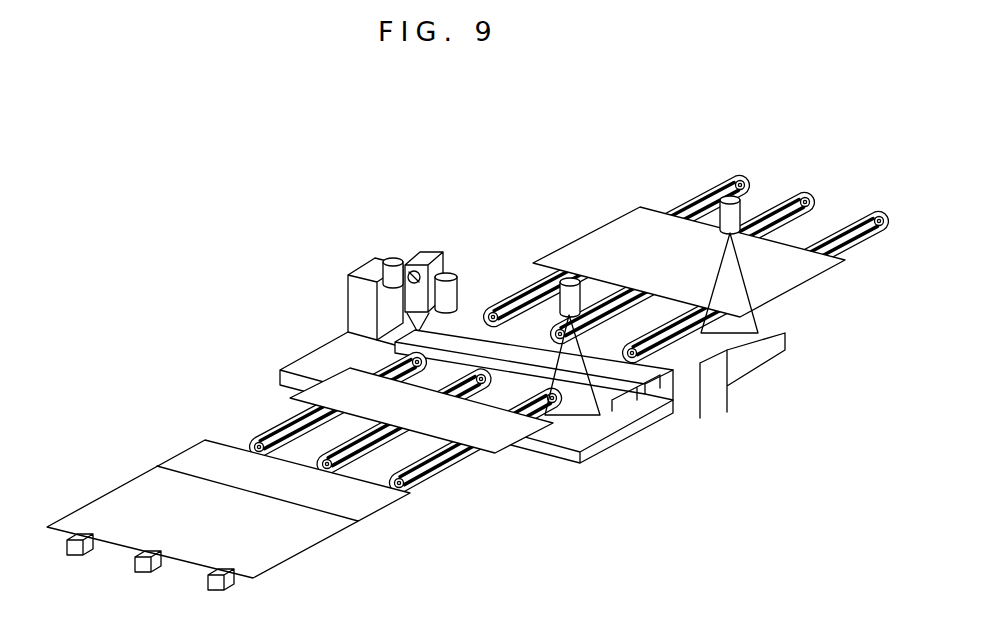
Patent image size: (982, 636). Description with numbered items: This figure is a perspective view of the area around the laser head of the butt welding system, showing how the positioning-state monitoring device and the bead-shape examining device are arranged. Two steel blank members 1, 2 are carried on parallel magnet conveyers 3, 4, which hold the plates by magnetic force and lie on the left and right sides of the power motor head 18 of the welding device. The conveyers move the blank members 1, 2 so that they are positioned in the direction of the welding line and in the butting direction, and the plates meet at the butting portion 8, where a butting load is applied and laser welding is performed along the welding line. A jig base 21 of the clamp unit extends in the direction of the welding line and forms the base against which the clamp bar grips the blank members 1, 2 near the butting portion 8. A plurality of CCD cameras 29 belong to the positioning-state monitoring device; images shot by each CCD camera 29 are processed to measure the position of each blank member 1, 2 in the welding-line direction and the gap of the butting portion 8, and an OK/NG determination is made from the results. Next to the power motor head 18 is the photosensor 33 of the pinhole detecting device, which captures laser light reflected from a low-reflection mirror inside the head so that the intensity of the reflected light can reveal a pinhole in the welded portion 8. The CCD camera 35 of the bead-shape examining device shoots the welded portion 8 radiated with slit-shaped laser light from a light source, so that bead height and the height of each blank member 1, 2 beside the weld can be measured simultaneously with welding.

The blank member 1 is at (112, 503).
The blank member 2 is at (190, 460).
The magnet conveyer 3 is at (262, 404).
The magnet conveyer 4 is at (679, 181).
The butting portion (welded portion) 8 is at (327, 513).
The power motor head 18 is at (430, 240).
The jig base 21 is at (623, 400).
The CCD camera 29 is at (447, 273).
The photosensor 33 is at (412, 273).
The CCD camera 35 is at (393, 258).